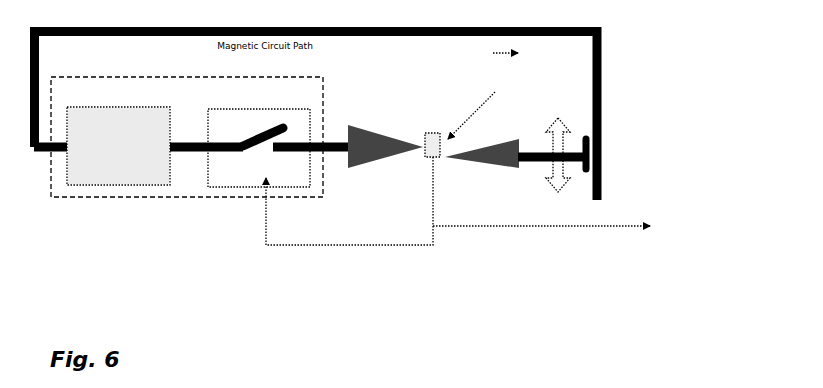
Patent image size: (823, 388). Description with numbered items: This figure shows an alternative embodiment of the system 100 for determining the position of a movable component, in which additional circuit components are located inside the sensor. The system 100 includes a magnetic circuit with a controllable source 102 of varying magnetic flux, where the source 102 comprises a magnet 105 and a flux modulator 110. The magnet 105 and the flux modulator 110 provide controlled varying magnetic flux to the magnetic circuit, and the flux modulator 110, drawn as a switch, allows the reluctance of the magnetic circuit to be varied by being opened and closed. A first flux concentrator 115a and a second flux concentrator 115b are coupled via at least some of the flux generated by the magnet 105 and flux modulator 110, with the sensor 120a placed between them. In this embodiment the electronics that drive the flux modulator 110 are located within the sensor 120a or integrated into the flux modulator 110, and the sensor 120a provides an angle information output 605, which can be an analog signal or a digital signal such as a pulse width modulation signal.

The system 100 is at (310, 172).
The controllable source of varying magnetic flux 102 is at (200, 78).
The magnet 105 is at (157, 120).
The flux modulator 110 is at (292, 122).
The first flux concentrator 115a is at (370, 152).
The second flux concentrator 115b is at (500, 152).
The sensor 120a is at (427, 135).
The angle information output 605 is at (597, 209).